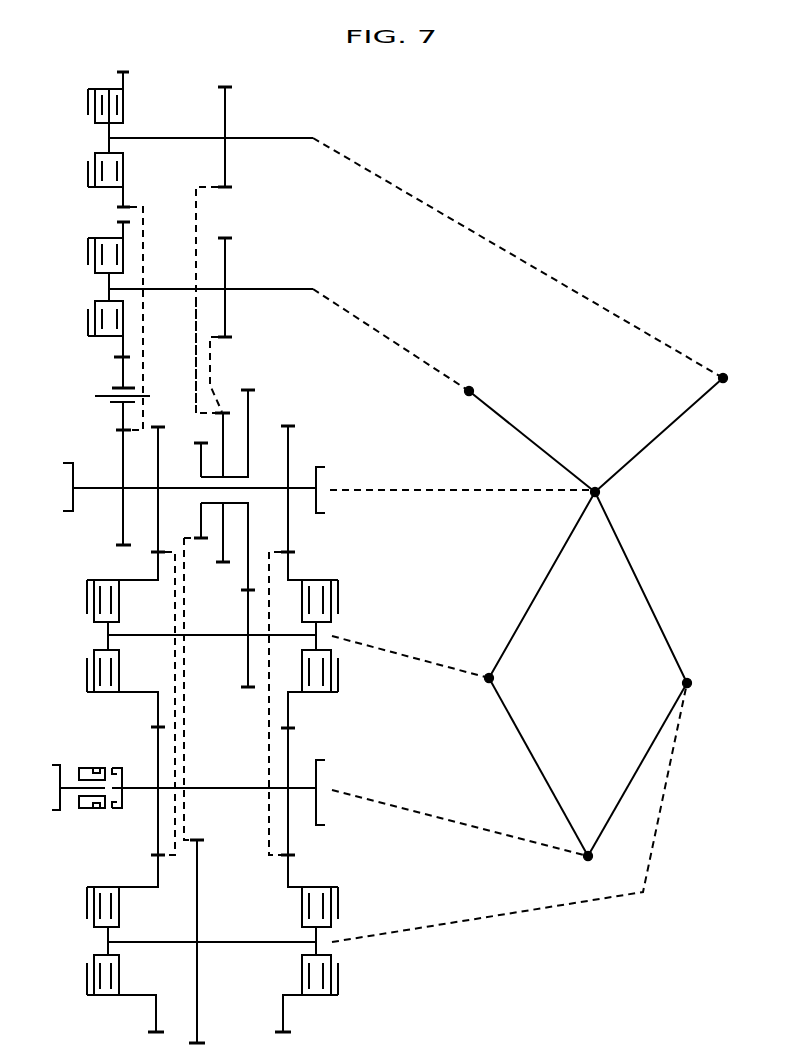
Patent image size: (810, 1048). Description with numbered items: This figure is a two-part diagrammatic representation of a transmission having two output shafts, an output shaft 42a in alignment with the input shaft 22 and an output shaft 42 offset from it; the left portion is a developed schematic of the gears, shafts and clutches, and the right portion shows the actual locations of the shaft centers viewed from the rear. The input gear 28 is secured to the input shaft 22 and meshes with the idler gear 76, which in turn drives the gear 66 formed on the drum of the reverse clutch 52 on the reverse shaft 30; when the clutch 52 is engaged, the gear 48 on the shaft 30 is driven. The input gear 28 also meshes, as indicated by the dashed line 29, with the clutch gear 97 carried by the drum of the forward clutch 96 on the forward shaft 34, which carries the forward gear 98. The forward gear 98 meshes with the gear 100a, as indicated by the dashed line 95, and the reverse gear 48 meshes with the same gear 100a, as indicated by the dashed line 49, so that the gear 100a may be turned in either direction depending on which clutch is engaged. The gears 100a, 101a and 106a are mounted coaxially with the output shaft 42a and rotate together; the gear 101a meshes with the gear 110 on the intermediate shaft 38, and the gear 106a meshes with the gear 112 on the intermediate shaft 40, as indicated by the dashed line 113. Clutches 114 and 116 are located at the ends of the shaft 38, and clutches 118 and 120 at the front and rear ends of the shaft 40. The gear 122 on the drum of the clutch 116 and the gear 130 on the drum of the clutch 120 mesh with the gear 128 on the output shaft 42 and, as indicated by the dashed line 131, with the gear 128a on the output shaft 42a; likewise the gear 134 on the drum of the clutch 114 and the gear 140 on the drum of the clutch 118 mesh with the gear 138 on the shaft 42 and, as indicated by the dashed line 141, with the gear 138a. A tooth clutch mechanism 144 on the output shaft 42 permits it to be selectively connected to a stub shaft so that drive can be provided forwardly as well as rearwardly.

The input shaft 22 is at (98, 490).
The input gear 28 is at (123, 448).
The dashed line 29 is at (143, 243).
The reverse shaft 30 is at (285, 289).
The forward shaft 34 is at (285, 138).
The intermediate shaft 38 is at (220, 638).
The intermediate shaft 40 is at (240, 945).
The output shaft 42 is at (232, 790).
The output shaft 42a is at (264, 485).
The reverse gear 48 is at (225, 250).
The dashed line 49 is at (213, 362).
The clutch construction 52 is at (83, 232).
The gear 66 is at (122, 347).
The idler gear 76 is at (122, 371).
The dashed line 95 is at (196, 374).
The forward clutch 96 is at (84, 85).
The clutch gear 97 is at (129, 73).
The forward gear 98 is at (225, 102).
The gear 100a is at (223, 432).
The gear 101a is at (248, 402).
The gear 106a is at (201, 458).
The gear 110 is at (248, 608).
The gear 112 is at (197, 910).
The dashed line 113 is at (184, 735).
The clutch 114 is at (80, 574).
The clutch 116 is at (346, 576).
The clutch 118 is at (82, 1002).
The clutch 120 is at (338, 1007).
The gear 122 is at (288, 714).
The gear 128 is at (288, 752).
The gear 128a is at (288, 448).
The gear 130 is at (288, 873).
The dashed line 131 is at (269, 826).
The gear 134 is at (158, 703).
The gear 138 is at (158, 742).
The gear 138a is at (158, 525).
The gear 140 is at (158, 870).
The dashed line 141 is at (172, 798).
The tooth clutch mechanism 144 is at (100, 752).